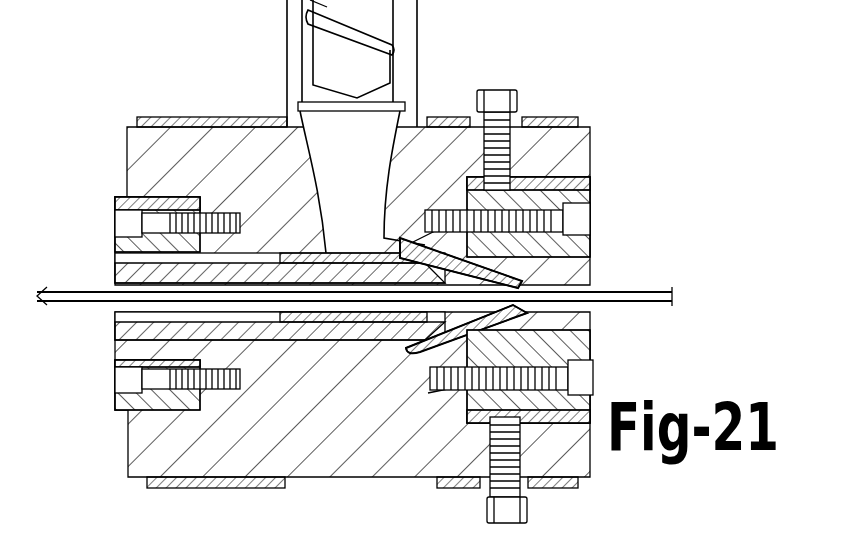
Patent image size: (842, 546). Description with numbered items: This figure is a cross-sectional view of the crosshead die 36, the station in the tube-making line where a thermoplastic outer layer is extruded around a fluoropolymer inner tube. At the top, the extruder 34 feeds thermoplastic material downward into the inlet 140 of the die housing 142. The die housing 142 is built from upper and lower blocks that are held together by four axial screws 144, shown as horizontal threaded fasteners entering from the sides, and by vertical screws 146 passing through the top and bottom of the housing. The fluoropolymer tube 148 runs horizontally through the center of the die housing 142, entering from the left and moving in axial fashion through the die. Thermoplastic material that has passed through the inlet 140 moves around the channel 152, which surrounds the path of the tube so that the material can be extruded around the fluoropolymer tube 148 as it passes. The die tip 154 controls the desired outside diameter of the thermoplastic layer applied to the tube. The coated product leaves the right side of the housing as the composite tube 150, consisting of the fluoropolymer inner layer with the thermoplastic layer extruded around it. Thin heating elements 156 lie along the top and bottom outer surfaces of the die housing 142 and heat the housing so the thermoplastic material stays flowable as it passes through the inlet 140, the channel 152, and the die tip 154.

The extruder 34 is at (418, 32).
The crosshead die 36 is at (100, 162).
The inlet 140 is at (378, 149).
The die housing 142 is at (592, 156).
The axial screws 144 is at (625, 360).
The vertical screws 146 is at (510, 95).
The fluoropolymer tube 148 is at (68, 292).
The composite tube 150 is at (627, 288).
The channel 152 is at (593, 237).
The die tip 154 is at (398, 352).
The heating elements 156 is at (222, 102).